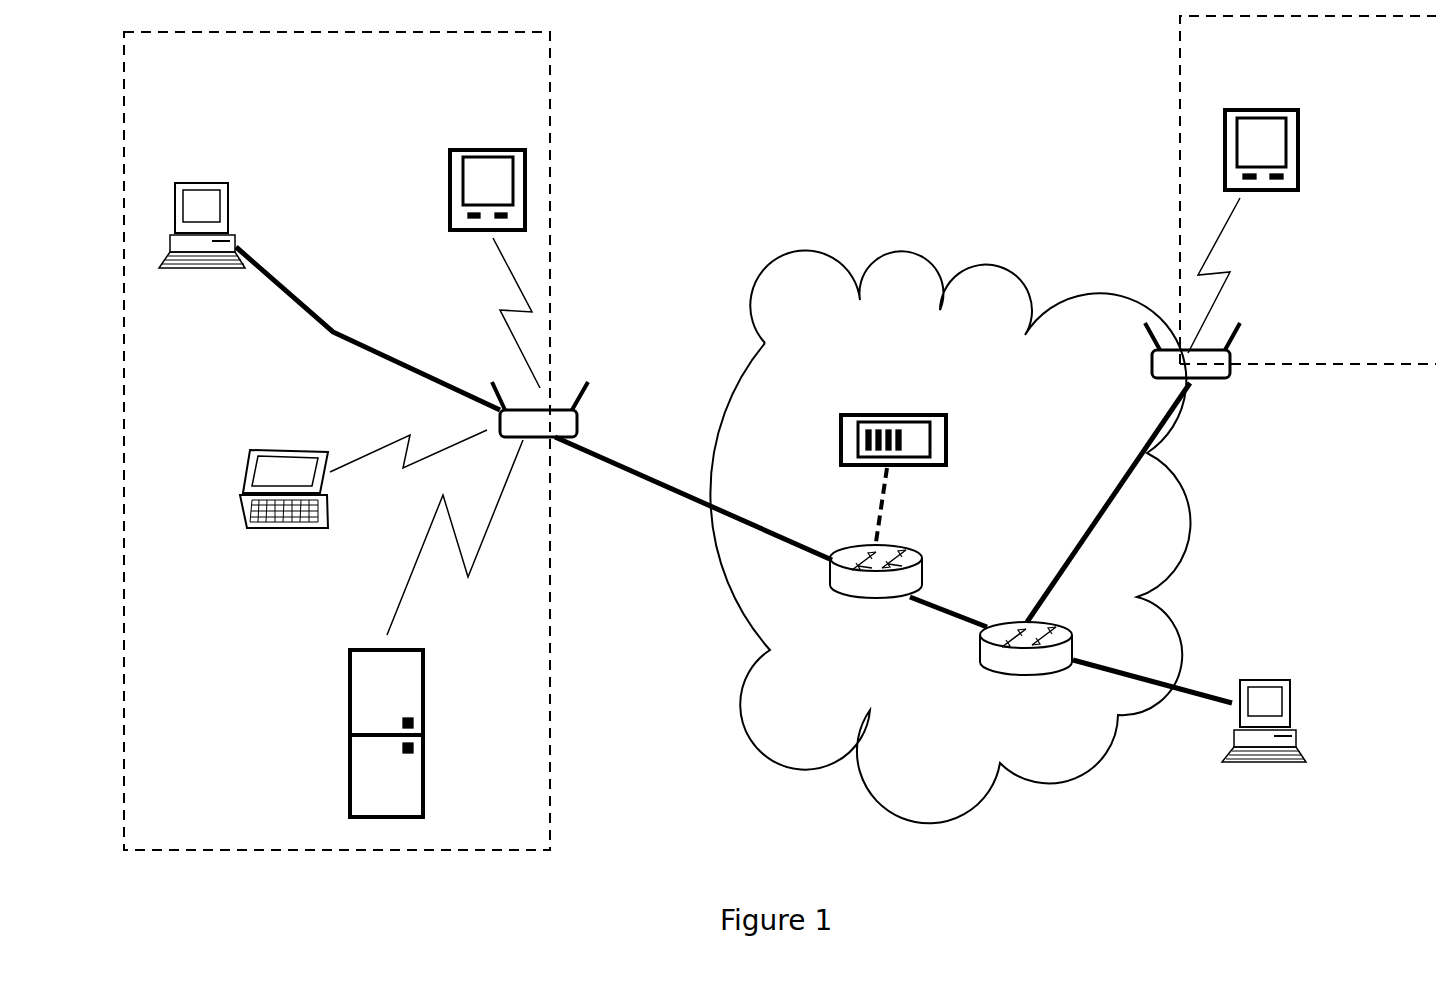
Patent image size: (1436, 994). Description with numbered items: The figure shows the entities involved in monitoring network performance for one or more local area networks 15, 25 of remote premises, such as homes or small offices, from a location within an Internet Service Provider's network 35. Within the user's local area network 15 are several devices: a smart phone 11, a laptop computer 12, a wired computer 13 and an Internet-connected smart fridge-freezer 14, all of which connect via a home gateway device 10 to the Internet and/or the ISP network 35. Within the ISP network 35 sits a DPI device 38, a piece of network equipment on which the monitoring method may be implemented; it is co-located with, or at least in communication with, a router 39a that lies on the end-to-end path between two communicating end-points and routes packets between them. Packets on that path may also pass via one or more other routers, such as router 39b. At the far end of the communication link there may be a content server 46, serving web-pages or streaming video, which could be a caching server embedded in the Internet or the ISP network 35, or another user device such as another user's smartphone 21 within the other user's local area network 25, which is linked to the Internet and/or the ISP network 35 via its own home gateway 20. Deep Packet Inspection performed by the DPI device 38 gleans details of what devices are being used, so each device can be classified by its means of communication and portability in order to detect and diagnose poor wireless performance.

The home gateway device 10 is at (586, 363).
The smart phone 11 is at (445, 156).
The laptop computer 12 is at (238, 479).
The wired computer 13 is at (236, 203).
The fridge-freezer 14 is at (344, 675).
The local area network 15 is at (560, 133).
The home gateway 20 is at (1214, 331).
The other user's smartphone 21 is at (1304, 184).
The local area network 25 is at (1176, 111).
The ISP network 35 is at (806, 250).
The DPI device 38 is at (896, 411).
The router 39a is at (914, 541).
The router 39b is at (1065, 619).
The content server 46 is at (1264, 663).